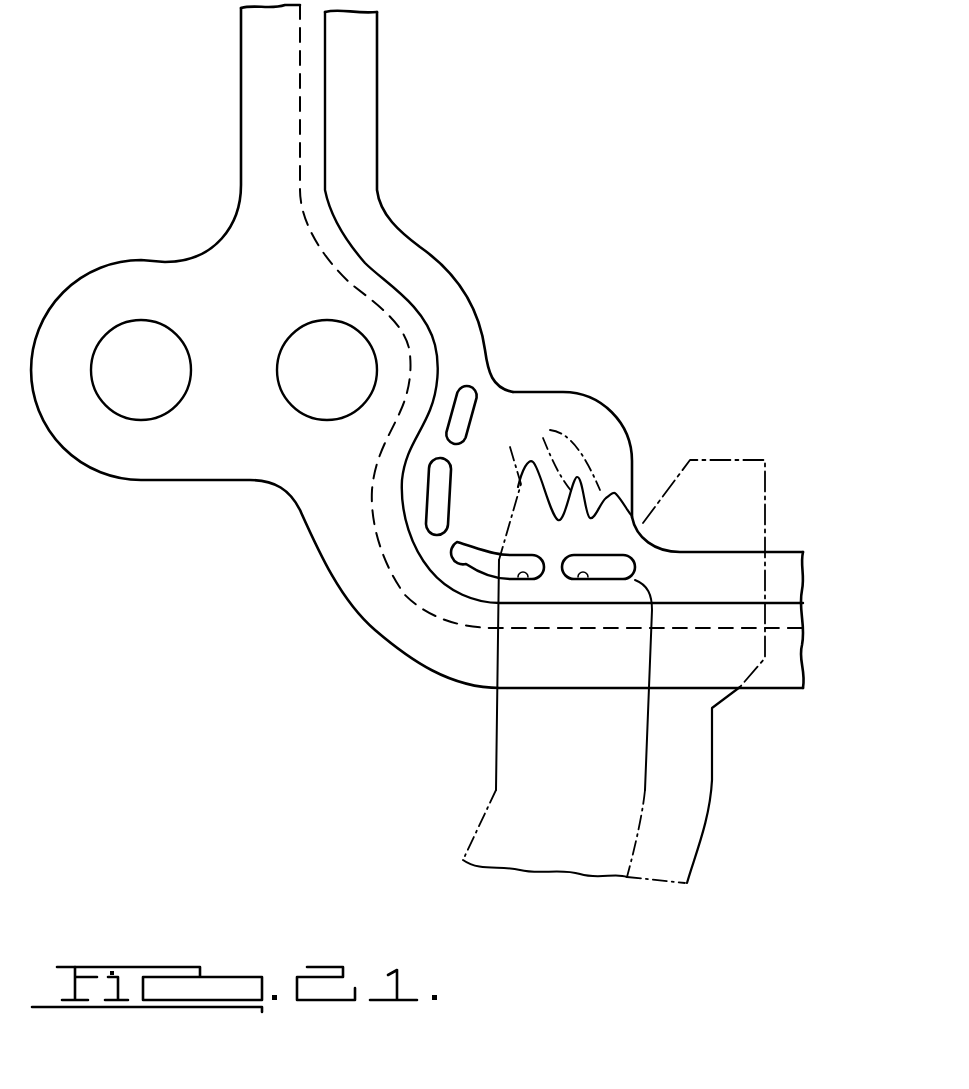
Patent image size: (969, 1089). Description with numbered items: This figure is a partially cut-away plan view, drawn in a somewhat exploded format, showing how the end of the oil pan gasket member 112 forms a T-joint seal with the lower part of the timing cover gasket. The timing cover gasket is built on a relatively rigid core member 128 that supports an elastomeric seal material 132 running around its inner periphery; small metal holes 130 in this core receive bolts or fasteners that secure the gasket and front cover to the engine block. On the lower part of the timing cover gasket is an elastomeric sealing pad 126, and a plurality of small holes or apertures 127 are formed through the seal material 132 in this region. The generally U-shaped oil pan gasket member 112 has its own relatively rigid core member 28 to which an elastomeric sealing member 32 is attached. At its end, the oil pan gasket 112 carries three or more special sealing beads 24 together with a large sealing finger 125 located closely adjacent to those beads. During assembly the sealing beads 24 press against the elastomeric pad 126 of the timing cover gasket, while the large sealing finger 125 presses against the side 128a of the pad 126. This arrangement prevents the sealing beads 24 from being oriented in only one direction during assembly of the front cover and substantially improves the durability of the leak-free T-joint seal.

The rigid core member 128 is at (256, 53).
The elastomeric seal material 132 is at (364, 99).
The small metal holes 130 is at (133, 345).
The small holes or apertures 127 is at (453, 437).
The sealing beads 24 is at (563, 489).
The sealing pad 126 is at (586, 415).
The side of the timing cover gasket pad 128a is at (634, 455).
The large sealing finger 125 is at (723, 480).
The rigid core member 28 is at (548, 785).
The elastomeric sealing member 32 is at (687, 760).
The oil pan gasket member 112 is at (713, 830).